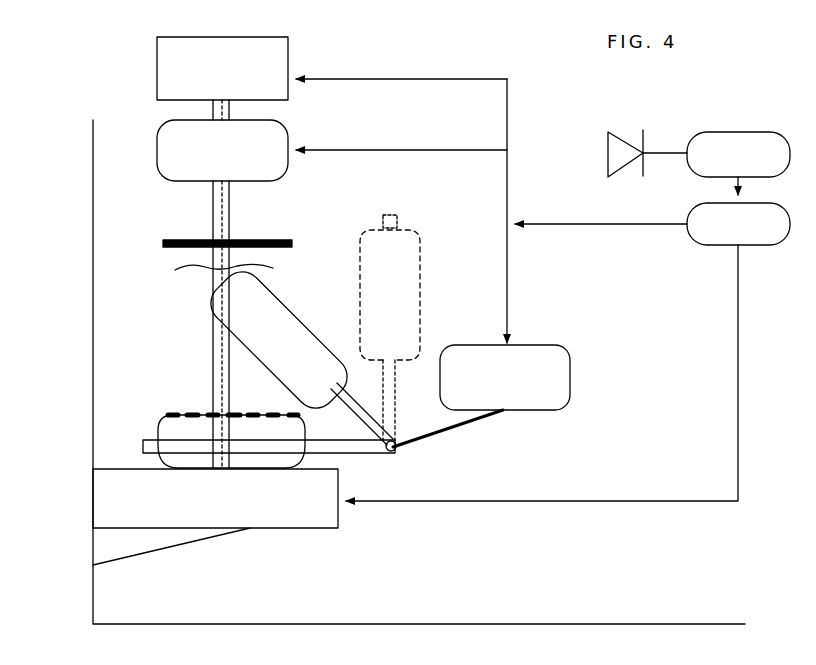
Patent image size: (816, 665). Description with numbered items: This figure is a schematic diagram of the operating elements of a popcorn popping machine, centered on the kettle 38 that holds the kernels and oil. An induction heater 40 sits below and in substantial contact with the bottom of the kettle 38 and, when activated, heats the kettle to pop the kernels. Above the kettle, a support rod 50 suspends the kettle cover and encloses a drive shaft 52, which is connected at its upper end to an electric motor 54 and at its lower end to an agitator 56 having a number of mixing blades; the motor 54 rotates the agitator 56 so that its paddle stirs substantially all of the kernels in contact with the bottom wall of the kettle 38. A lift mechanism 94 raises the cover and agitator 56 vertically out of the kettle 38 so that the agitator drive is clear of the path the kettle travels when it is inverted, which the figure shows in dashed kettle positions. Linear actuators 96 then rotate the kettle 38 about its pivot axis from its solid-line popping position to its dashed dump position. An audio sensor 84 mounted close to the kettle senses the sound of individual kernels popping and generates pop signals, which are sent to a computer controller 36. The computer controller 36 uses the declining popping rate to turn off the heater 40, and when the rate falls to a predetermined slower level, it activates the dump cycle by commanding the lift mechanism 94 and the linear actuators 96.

The motor 54 is at (244, 37).
The lift mechanism 94 is at (157, 121).
The support rod 50 is at (213, 212).
The drive shaft 52 is at (227, 203).
The agitator 56 is at (253, 238).
The kettle 38 is at (140, 420).
The induction heater 40 is at (113, 500).
The linear actuators 96 is at (572, 371).
The audio sensor 84 is at (738, 132).
The computer controller 36 is at (758, 246).